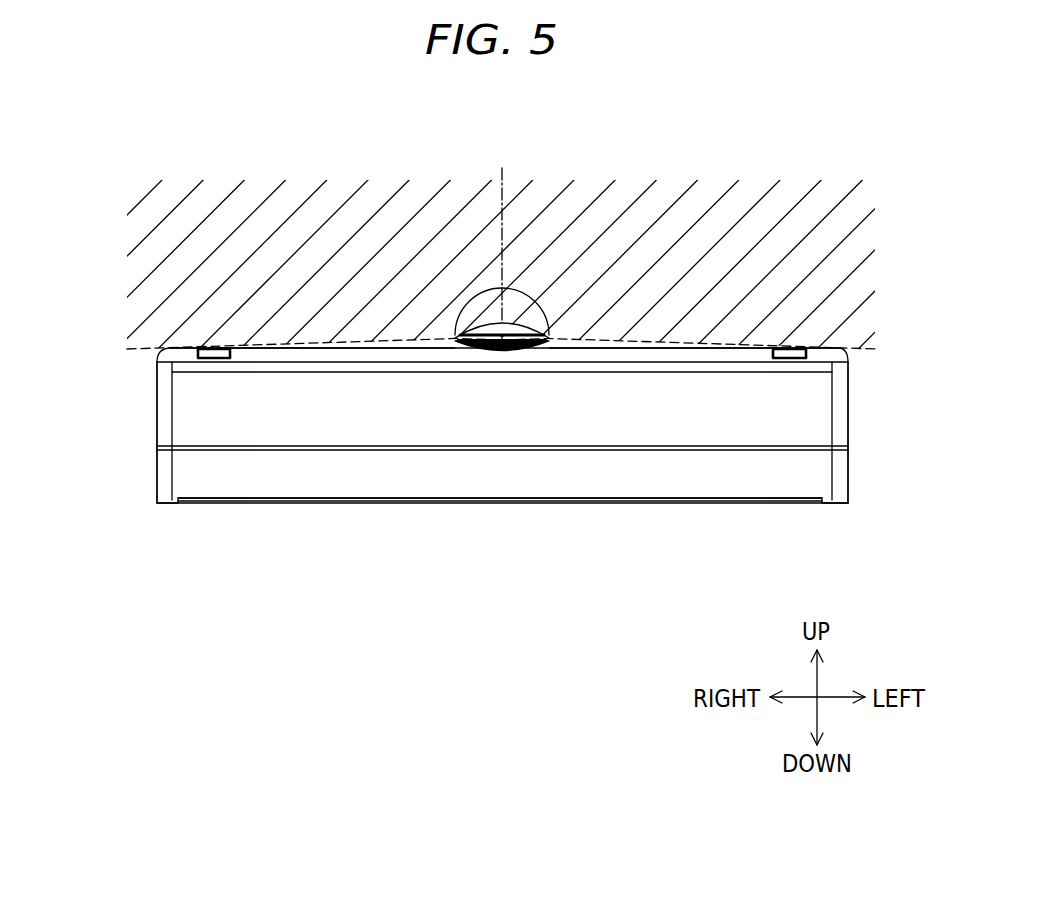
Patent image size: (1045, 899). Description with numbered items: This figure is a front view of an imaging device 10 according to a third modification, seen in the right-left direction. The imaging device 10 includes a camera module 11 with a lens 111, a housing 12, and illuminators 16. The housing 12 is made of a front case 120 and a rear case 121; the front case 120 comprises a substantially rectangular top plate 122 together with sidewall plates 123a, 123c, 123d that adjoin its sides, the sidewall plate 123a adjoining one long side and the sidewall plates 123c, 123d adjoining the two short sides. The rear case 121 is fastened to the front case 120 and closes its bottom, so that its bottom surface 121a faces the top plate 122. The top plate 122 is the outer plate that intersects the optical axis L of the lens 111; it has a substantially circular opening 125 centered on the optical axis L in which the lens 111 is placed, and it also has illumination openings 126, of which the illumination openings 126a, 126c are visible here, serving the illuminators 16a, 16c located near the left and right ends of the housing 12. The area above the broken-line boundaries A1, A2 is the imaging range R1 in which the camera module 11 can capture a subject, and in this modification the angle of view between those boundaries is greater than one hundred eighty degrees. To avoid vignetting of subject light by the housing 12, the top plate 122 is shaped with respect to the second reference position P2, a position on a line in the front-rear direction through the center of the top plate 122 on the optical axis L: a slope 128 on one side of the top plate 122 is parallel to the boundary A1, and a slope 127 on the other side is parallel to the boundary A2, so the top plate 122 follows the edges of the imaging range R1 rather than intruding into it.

The imaging device 10 is at (105, 250).
The camera module 11 is at (441, 476).
The lens 111 is at (473, 333).
The housing 12 is at (301, 620).
The front case 120 is at (577, 432).
The rear case 121 is at (838, 477).
The bottom surface 121a is at (568, 503).
The top plate 122 is at (504, 477).
The sidewall plate 123a is at (376, 425).
The sidewall plate 123c is at (155, 410).
The sidewall plate 123d is at (848, 407).
The opening 125 is at (560, 347).
The illumination openings 126 is at (477, 455).
The illumination opening 126a is at (806, 359).
The illumination opening 126c is at (228, 358).
The slope 127 is at (703, 345).
The slope 128 is at (328, 348).
The illuminators 16 is at (434, 472).
The illuminator 16a is at (783, 359).
The illuminator 16c is at (203, 358).
The boundary A1 is at (155, 349).
The boundary A2 is at (862, 347).
The optical axis L is at (502, 170).
The second reference position P2 is at (502, 336).
The imaging range R1 is at (762, 190).